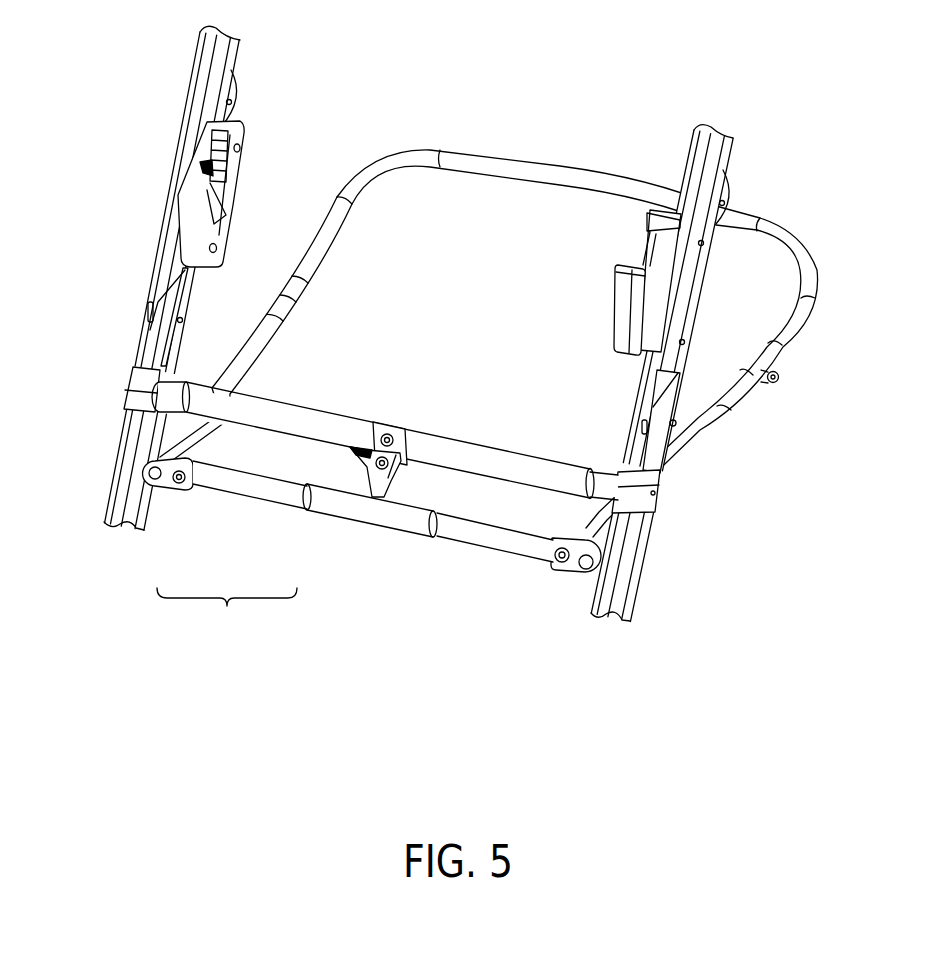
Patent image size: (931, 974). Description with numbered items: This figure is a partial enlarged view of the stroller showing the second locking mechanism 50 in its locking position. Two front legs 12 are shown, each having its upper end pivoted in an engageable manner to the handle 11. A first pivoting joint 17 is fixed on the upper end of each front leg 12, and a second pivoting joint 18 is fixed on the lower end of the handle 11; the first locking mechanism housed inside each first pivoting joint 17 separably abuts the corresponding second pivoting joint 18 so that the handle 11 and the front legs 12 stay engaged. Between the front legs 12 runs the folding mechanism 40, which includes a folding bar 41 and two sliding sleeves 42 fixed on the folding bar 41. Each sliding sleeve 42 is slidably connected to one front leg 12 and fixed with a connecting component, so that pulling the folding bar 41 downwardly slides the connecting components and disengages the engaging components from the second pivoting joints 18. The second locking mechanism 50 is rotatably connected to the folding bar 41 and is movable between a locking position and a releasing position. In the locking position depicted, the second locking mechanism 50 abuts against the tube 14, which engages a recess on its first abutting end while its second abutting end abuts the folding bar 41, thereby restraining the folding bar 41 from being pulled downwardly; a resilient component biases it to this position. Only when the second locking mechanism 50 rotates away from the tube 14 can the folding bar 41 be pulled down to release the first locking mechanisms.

The handle 11 is at (202, 90).
The front leg 12 is at (120, 475).
The tube 14 is at (467, 532).
The first pivoting joint 17 is at (143, 346).
The second pivoting joint 18 is at (163, 275).
The folding mechanism 40 is at (227, 610).
The folding bar 41 is at (260, 412).
The sliding sleeve 42 is at (133, 388).
The second locking mechanism 50 is at (378, 497).